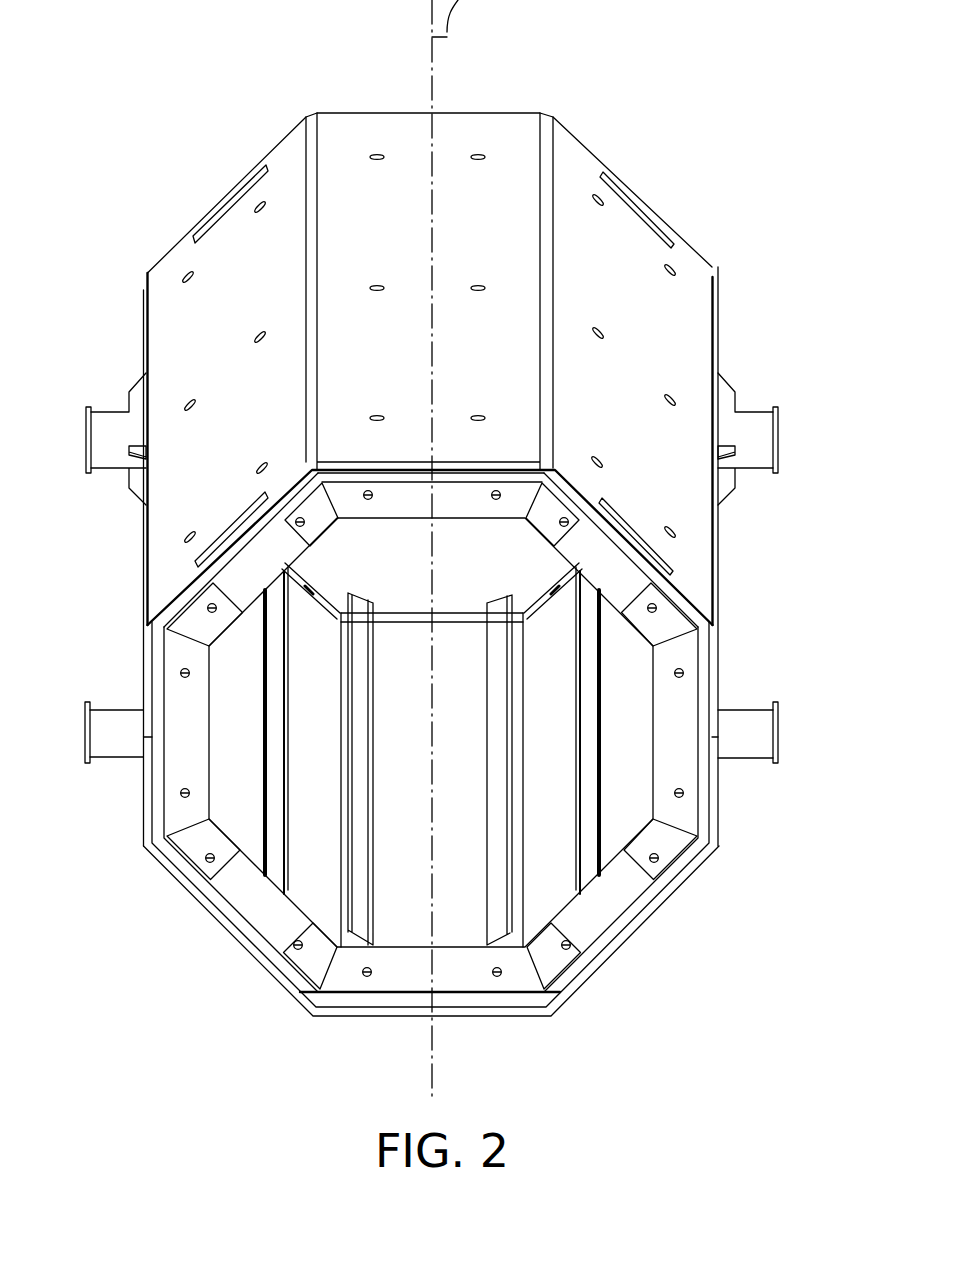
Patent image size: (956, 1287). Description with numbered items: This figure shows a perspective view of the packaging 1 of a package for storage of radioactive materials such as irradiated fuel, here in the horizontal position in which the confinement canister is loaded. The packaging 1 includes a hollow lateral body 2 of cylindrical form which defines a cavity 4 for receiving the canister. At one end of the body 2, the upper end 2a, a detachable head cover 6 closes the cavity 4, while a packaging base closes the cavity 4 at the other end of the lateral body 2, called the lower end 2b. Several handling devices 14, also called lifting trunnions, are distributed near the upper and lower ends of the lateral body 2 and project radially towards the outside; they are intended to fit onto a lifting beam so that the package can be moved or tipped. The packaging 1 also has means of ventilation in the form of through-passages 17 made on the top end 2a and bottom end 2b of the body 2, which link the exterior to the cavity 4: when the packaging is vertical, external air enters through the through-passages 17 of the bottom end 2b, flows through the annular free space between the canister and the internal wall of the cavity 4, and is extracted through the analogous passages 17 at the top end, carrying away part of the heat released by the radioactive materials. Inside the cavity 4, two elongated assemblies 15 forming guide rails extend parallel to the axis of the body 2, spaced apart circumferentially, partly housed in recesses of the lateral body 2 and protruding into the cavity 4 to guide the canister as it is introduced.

The packaging 1 is at (232, 82).
The hollow lateral body 2 is at (700, 330).
The upper end 2a is at (693, 277).
The lower end 2b is at (697, 565).
The cavity 4 is at (464, 725).
The detachable head cover 6 is at (463, 537).
The handling device 14 is at (110, 420).
The assembly forming guide rail 15 is at (364, 912).
The through-passage 17 is at (223, 212).